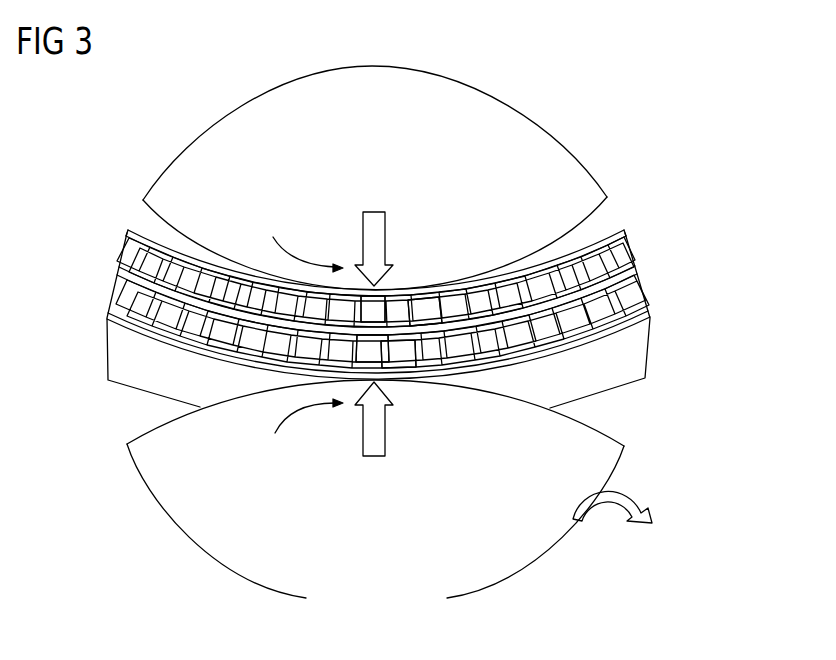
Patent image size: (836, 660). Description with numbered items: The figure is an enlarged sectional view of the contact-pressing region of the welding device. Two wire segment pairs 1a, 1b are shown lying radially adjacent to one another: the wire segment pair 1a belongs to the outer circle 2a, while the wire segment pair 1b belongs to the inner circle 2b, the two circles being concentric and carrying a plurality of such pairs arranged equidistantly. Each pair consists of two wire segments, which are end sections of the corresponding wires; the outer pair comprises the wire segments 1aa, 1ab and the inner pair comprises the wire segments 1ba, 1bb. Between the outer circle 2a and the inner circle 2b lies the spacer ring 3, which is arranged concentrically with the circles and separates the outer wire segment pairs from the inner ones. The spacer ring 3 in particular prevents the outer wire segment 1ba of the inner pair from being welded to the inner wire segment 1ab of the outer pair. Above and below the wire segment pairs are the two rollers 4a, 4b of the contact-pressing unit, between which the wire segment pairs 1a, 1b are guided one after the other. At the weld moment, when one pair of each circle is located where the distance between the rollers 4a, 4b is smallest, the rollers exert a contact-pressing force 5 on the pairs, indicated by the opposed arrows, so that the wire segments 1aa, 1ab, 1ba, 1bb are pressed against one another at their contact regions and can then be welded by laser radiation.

The wire segment pair 1a is at (372, 384).
The wire segment 1aa is at (376, 384).
The inner wire segment 1ab is at (392, 346).
The wire segment pair 1b is at (372, 289).
The wire segment 1bb is at (376, 289).
The outer wire segment 1ba is at (414, 318).
The outer circle 2a is at (113, 308).
The inner circle 2b is at (130, 268).
The spacer ring 3 is at (645, 282).
The roller 4a is at (522, 543).
The roller 4b is at (566, 160).
The contact-pressing force 5 is at (372, 222).